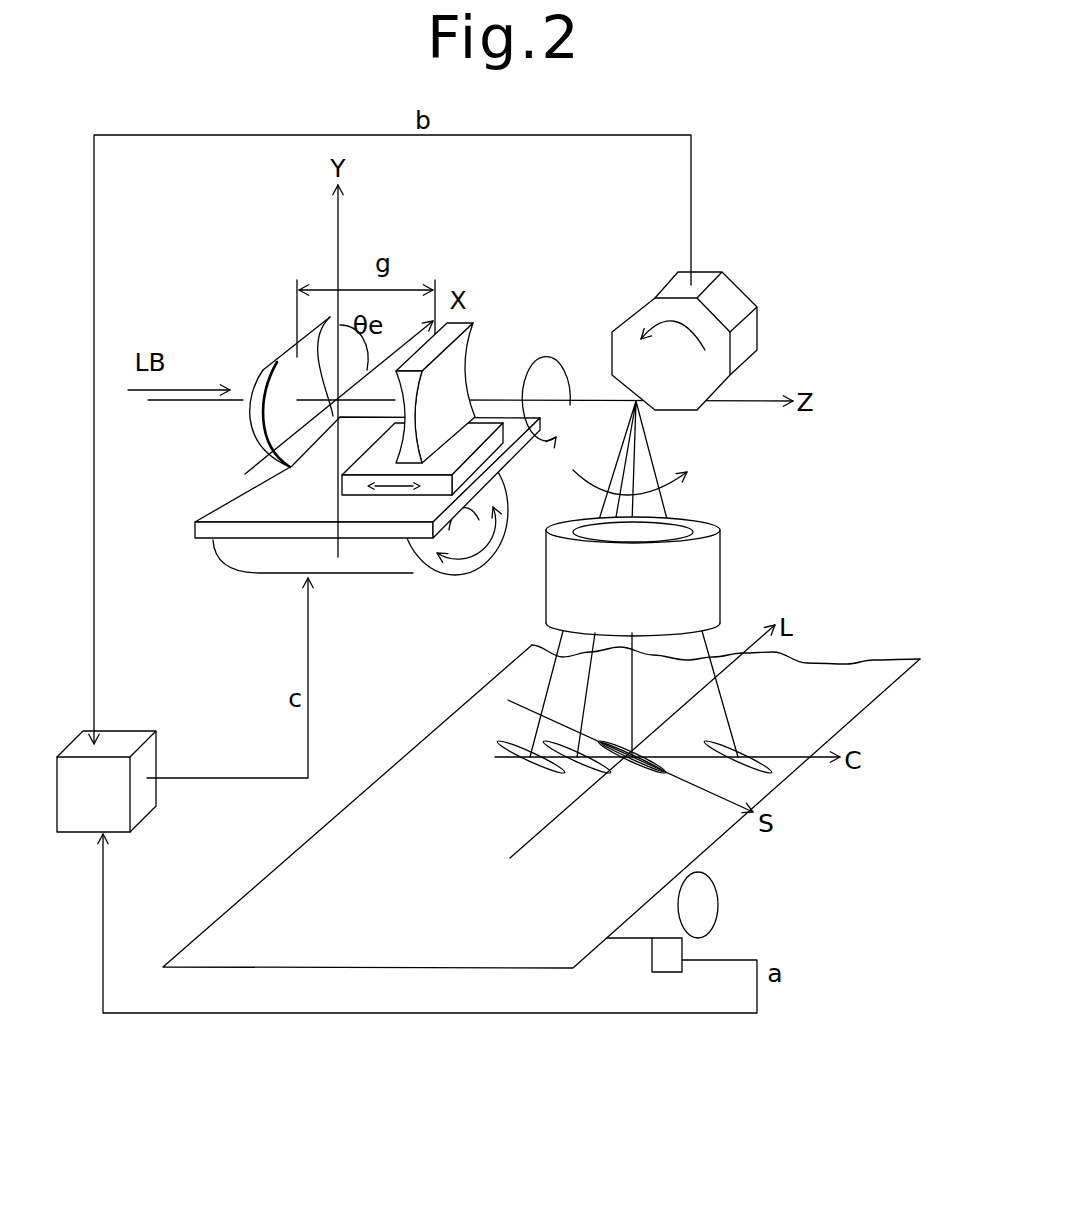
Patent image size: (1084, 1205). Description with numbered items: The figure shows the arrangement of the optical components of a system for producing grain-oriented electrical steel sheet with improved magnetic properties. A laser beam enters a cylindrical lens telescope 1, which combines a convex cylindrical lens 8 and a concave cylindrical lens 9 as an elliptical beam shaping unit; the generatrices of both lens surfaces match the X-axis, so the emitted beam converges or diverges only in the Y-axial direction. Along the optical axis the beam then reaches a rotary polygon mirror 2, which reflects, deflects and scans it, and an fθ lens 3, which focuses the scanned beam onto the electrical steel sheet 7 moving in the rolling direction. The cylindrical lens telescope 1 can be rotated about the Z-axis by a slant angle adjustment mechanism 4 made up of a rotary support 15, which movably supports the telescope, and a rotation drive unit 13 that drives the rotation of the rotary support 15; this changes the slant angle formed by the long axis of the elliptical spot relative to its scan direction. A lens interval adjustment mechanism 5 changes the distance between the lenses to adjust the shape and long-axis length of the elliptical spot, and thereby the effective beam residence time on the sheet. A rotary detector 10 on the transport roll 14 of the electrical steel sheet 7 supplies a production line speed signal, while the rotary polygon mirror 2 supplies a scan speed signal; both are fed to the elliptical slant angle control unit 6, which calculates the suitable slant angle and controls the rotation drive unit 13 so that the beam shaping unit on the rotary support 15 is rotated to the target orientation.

The cylindrical lens telescope 1 is at (350, 374).
The rotary polygon mirror 2 is at (732, 302).
The fθ lens 3 is at (694, 580).
The slant angle adjustment mechanism 4 is at (416, 575).
The lens interval adjustment mechanism 5 is at (360, 493).
The elliptical slant angle control unit 6 is at (106, 781).
The electrical steel sheet 7 is at (289, 886).
The convex cylindrical lens 8 is at (243, 422).
The concave cylindrical lens 9 is at (458, 378).
The rotary detector 10 is at (685, 950).
The rotation drive unit 13 is at (272, 575).
The transport roll 14 is at (698, 907).
The rotary support 15 is at (205, 512).